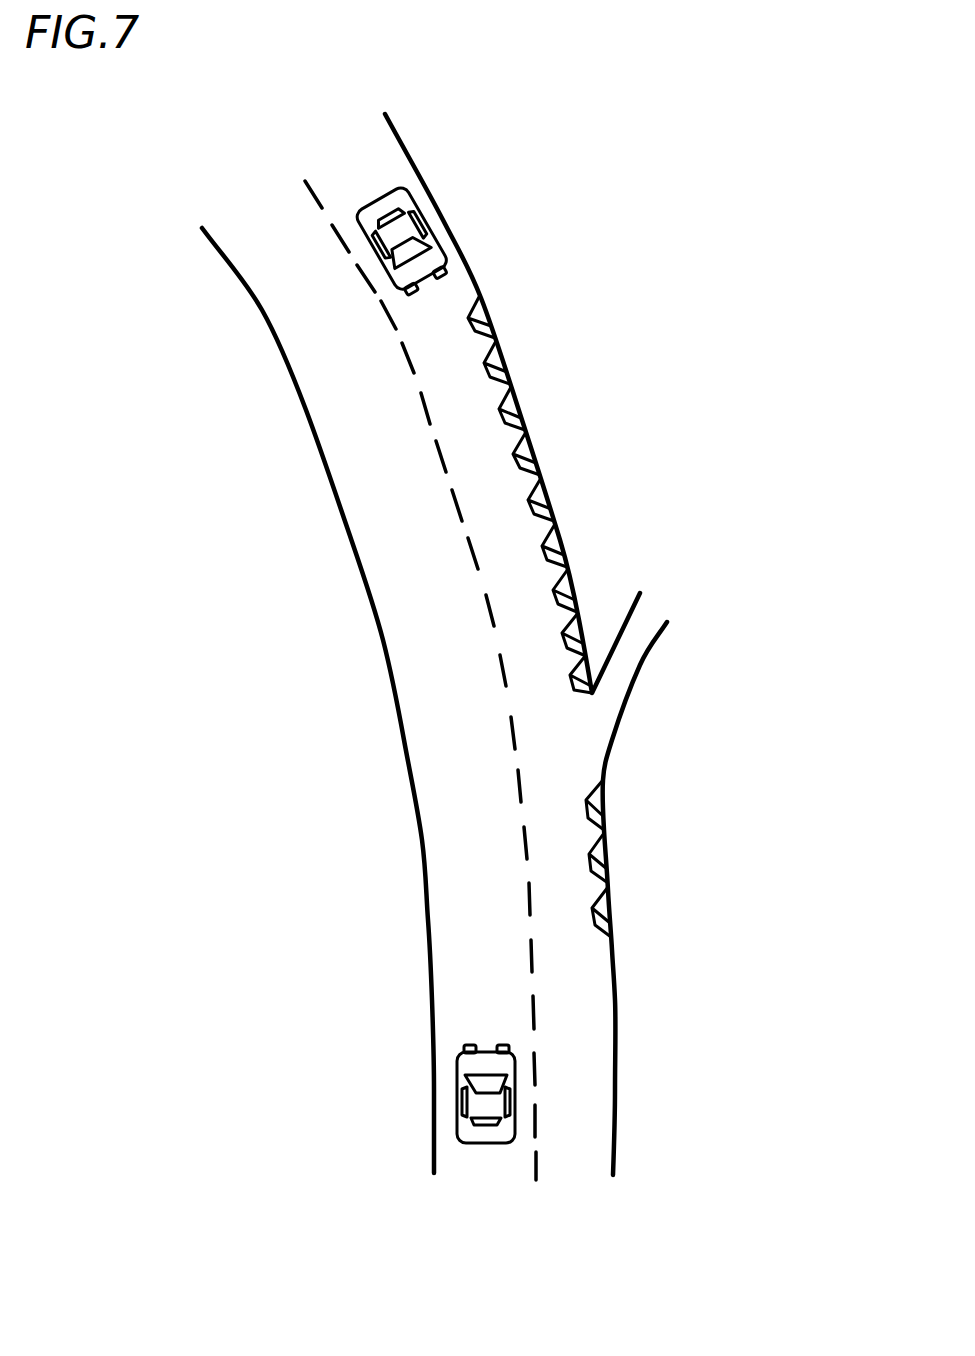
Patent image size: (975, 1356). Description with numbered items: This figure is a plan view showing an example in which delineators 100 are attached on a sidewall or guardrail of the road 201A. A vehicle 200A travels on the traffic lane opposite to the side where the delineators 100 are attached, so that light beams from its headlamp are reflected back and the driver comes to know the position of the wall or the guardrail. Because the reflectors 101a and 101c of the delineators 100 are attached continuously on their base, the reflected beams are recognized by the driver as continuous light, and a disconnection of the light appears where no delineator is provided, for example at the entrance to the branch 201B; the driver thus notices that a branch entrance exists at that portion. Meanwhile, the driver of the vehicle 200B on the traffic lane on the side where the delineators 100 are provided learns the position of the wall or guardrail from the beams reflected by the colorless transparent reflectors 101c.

The delineator 100 is at (518, 386).
The reflector 101a is at (612, 917).
The colorless transparent reflector 101c is at (610, 890).
The vehicle 200A is at (457, 1103).
The vehicle 200B is at (436, 218).
The road 201A is at (432, 700).
The branch 201B is at (637, 666).